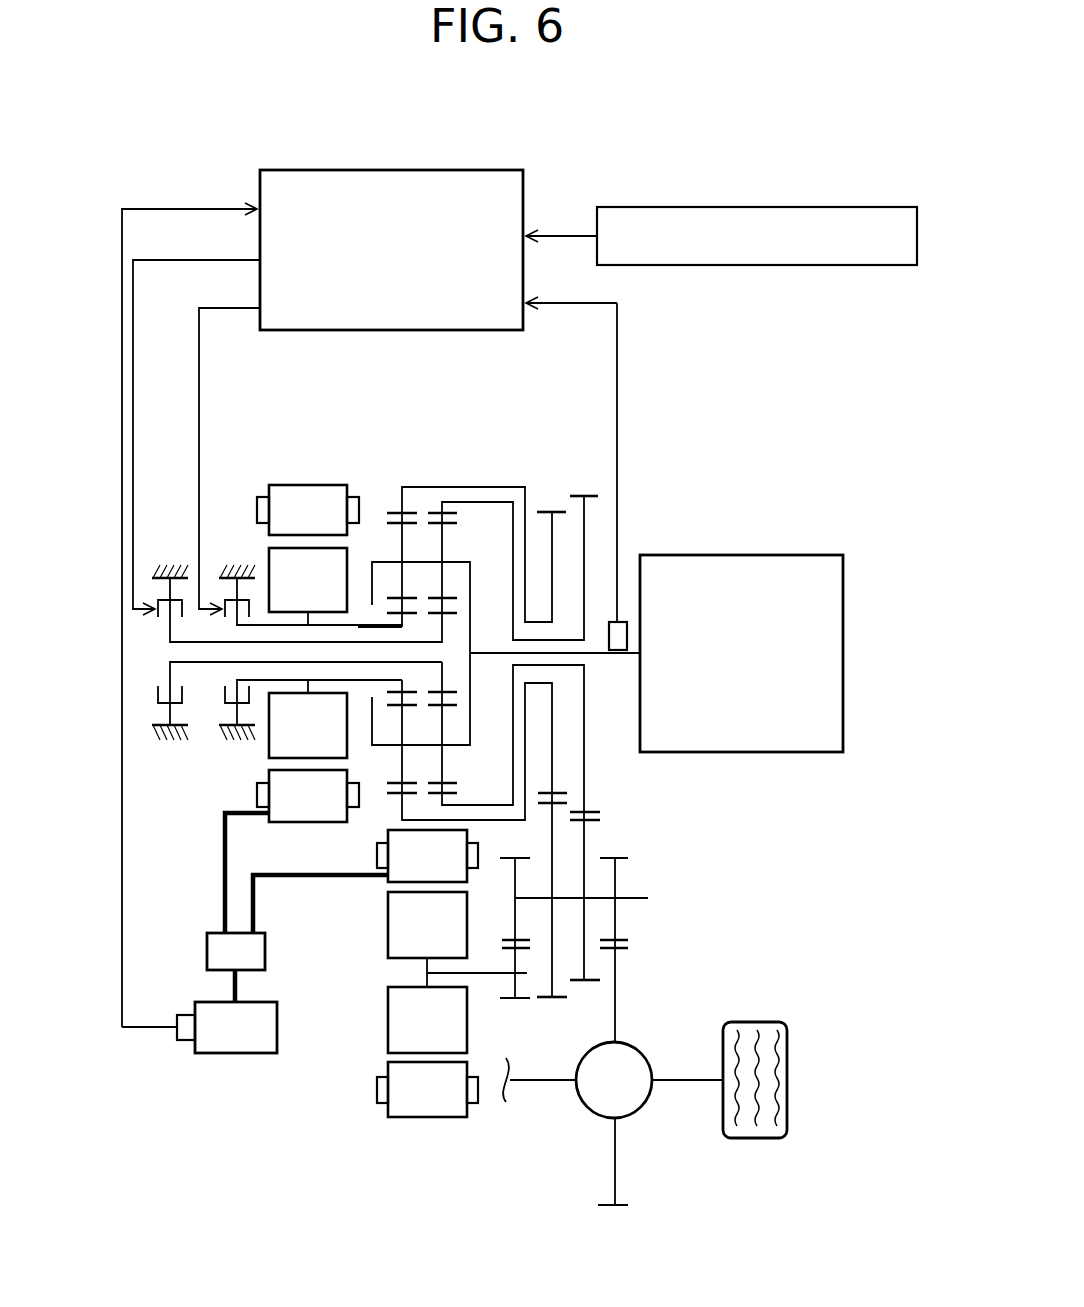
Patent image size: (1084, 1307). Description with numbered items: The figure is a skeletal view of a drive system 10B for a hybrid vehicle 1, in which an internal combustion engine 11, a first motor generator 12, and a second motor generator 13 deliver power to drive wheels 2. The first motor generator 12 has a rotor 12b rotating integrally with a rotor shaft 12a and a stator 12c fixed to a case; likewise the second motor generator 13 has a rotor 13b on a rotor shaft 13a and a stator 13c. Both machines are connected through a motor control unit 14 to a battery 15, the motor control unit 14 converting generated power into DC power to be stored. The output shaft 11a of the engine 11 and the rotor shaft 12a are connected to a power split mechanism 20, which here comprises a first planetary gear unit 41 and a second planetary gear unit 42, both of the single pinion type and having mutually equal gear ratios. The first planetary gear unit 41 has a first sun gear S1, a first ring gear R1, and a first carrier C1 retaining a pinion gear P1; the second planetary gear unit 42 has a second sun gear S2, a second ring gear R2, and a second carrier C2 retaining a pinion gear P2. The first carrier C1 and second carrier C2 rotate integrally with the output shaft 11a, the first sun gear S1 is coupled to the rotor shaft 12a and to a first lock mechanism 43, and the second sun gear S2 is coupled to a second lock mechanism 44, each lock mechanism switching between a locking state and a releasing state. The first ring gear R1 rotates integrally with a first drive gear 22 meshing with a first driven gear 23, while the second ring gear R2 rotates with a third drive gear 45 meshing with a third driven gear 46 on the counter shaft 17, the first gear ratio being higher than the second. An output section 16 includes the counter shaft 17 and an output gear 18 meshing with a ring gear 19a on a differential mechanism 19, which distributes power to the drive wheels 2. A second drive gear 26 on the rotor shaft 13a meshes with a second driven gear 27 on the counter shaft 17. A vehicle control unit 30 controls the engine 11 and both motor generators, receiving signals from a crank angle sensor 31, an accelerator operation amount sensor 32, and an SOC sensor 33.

The hybrid vehicle 1 is at (252, 1164).
The drive wheels 2 is at (767, 1130).
The drive system 10B is at (712, 372).
The internal combustion engine 11 is at (755, 555).
The output shaft 11a is at (603, 655).
The first motor generator 12 is at (292, 590).
The rotor shaft 12a is at (357, 627).
The rotor 12b is at (277, 747).
The stator 12c is at (283, 490).
The second motor generator 13 is at (423, 1034).
The rotor shaft 13a is at (490, 977).
The rotor 13b is at (388, 1025).
The stator 13c is at (402, 1108).
The motor control unit 14 is at (207, 955).
The battery 15 is at (232, 1040).
The output section 16 is at (635, 948).
The counter shaft 17 is at (630, 898).
The output gear 18 is at (615, 925).
The differential mechanism 19 is at (627, 1060).
The ring gear 19a is at (615, 978).
The power split mechanism 20 is at (506, 676).
The first drive gear 22 is at (545, 512).
The first driven gear 23 is at (552, 1000).
The second drive gear 26 is at (521, 1003).
The second driven gear 27 is at (513, 918).
The vehicle control unit 30 is at (525, 190).
The crank angle sensor 31 is at (620, 642).
The accelerator operation amount sensor 32 is at (712, 207).
The SOC sensor 33 is at (182, 1043).
The first planetary gear unit 41 is at (473, 580).
The second planetary gear unit 42 is at (506, 713).
The first lock mechanism 43 is at (237, 558).
The second lock mechanism 44 is at (170, 558).
The third drive gear 45 is at (588, 494).
The third driven gear 46 is at (587, 838).
The first ring gear R1 is at (393, 795).
The second ring gear R2 is at (435, 503).
The pinion gear P1 is at (402, 530).
The pinion gear P2 is at (445, 550).
The first sun gear S1 is at (412, 608).
The second sun gear S2 is at (443, 627).
The first carrier C1 is at (392, 745).
The second carrier C2 is at (453, 743).